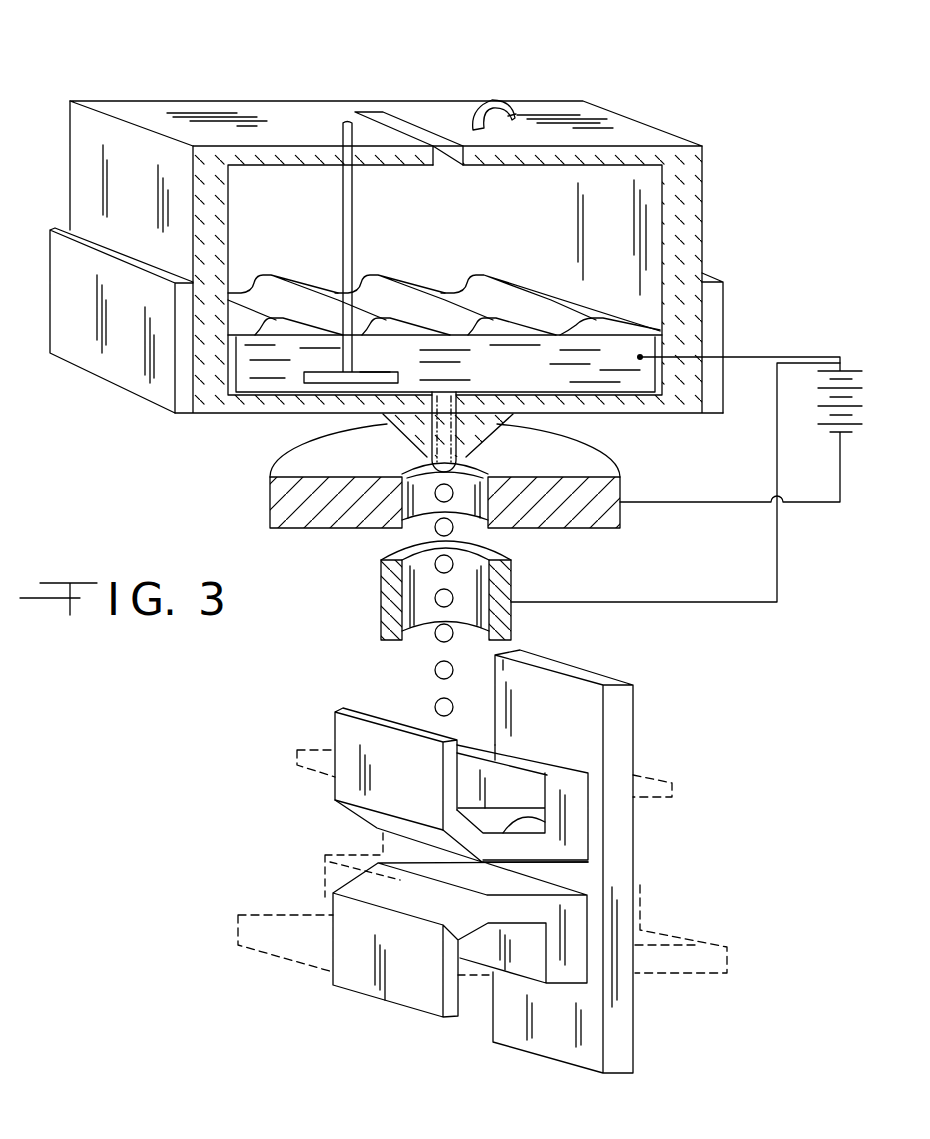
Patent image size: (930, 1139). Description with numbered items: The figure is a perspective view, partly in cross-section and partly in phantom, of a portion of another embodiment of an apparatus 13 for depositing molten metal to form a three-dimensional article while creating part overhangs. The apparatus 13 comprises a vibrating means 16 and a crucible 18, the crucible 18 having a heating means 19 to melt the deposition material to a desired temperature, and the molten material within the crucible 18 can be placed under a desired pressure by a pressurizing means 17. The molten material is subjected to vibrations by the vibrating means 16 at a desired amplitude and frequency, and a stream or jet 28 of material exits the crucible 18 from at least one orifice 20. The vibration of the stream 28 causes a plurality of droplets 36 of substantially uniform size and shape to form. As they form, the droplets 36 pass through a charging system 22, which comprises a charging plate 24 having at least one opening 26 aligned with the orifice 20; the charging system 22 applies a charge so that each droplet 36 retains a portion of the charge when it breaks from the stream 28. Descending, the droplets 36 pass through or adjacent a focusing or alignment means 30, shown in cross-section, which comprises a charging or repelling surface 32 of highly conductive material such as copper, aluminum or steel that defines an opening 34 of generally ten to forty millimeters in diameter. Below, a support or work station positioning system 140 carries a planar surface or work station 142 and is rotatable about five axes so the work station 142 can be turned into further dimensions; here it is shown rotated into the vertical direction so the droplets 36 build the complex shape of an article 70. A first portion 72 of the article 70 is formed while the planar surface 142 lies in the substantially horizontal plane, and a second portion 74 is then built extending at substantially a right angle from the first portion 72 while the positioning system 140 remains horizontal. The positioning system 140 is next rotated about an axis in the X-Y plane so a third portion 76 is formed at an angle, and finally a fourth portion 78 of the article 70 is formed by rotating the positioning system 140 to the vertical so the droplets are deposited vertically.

The apparatus 13 is at (129, 70).
The vibrating means 16 is at (348, 122).
The pressurizing means 17 is at (497, 100).
The crucible 18 is at (703, 190).
The heating means 19 is at (78, 368).
The orifice 20 is at (458, 428).
The charging system 22 is at (850, 370).
The charging plate 24 is at (270, 505).
The opening 26 is at (402, 483).
The stream or jet 28 is at (476, 486).
The focusing or alignment means 30 is at (372, 585).
The charging or repelling surface 32 is at (405, 603).
The opening 34 is at (490, 547).
The droplets 36 is at (435, 672).
The article 70 is at (320, 903).
The first portion 72 is at (545, 800).
The second portion 74 is at (560, 838).
The third portion 76 is at (378, 812).
The fourth portion 78 is at (335, 722).
The work station positioning system 140 is at (620, 722).
The planar surface or work station 142 is at (575, 728).